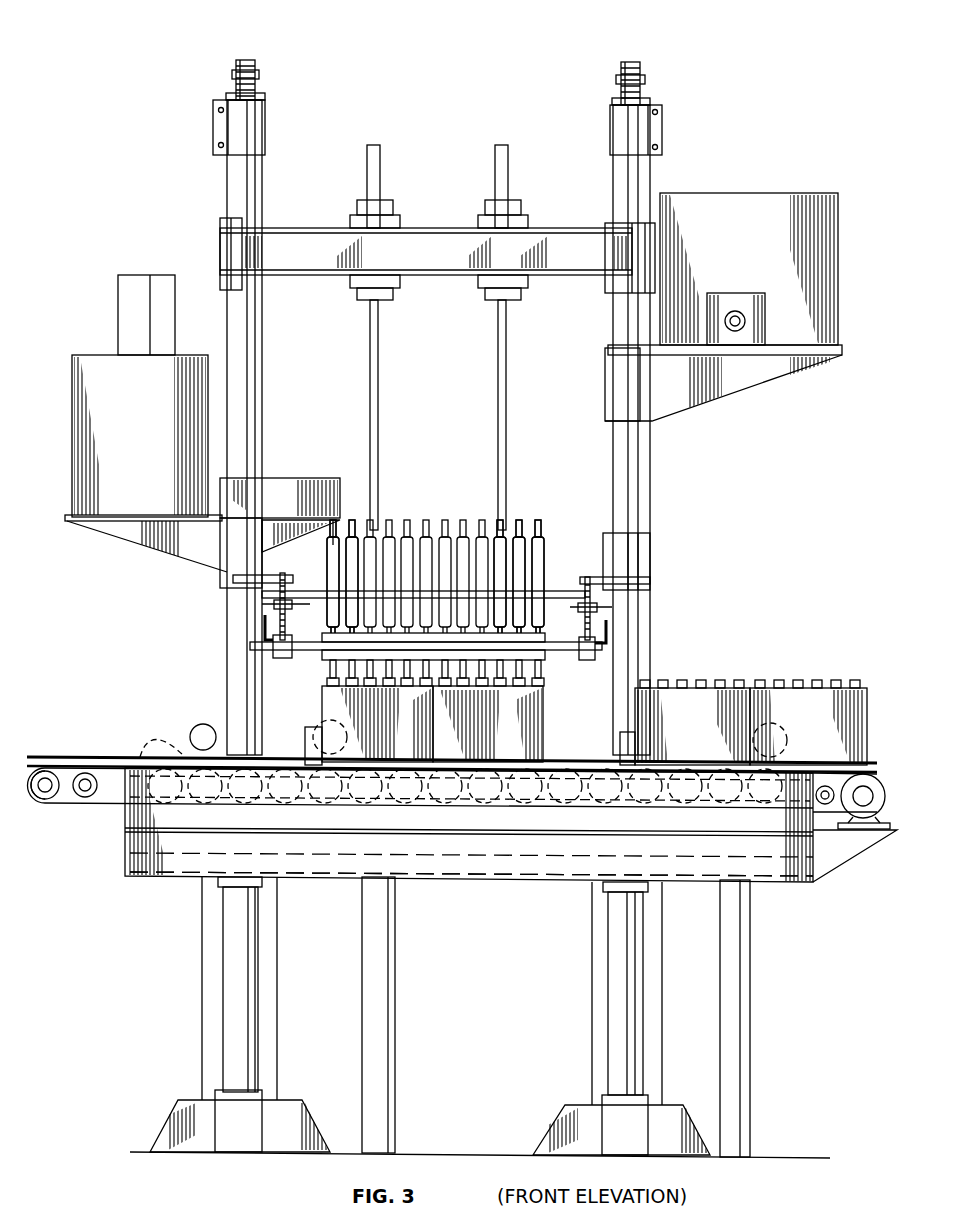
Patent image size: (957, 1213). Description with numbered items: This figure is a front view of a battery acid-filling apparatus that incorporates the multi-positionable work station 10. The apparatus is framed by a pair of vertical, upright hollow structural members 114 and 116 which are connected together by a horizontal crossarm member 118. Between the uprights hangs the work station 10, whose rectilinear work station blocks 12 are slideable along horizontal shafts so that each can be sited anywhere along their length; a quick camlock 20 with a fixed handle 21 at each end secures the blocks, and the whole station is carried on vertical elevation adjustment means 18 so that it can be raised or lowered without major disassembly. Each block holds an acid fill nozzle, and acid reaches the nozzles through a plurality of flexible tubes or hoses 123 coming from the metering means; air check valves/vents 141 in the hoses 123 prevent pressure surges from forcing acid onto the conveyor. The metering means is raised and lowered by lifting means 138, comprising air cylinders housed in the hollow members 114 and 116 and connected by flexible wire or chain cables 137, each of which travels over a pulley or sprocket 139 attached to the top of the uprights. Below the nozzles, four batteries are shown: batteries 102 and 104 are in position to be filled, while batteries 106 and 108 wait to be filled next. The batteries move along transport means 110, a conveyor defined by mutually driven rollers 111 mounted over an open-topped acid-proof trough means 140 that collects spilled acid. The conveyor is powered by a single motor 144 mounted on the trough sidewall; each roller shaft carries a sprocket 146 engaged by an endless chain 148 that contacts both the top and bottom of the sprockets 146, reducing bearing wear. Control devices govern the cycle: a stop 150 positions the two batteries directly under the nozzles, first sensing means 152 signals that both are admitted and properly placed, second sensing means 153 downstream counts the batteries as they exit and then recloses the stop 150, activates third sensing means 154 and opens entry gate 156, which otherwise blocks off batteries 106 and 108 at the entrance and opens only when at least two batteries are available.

The multi-positionable work station 10 is at (318, 663).
The work station block 12 is at (500, 620).
The vertical elevation adjustment means 18 is at (284, 620).
The quick camlock 20 is at (545, 652).
The fixed handle 21 is at (265, 626).
The battery 102 is at (326, 700).
The battery 104 is at (540, 700).
The battery 106 is at (675, 690).
The battery 108 is at (808, 690).
The transport means 110 is at (125, 858).
The rollers 111 is at (162, 745).
The vertical upright hollow structural member 114 is at (227, 324).
The vertical upright hollow structural member 116 is at (650, 478).
The horizontal crossarm member 118 is at (288, 228).
The flexible tubes or hoses 123 is at (405, 555).
The flexible wire or chain cable 137 is at (259, 80).
The lifting means 138 is at (362, 150).
The pulley or sprocket 139 is at (242, 60).
The trough means 140 is at (490, 878).
The air check valves/vents 141 is at (363, 520).
The motor 144 is at (868, 820).
The sprocket 146 is at (100, 803).
The endless chain 148 is at (60, 800).
The stop 150 is at (305, 745).
The first sensing means 152 is at (312, 728).
The second sensing means 153 is at (195, 730).
The third sensing means 154 is at (777, 725).
The entry gate 156 is at (620, 750).